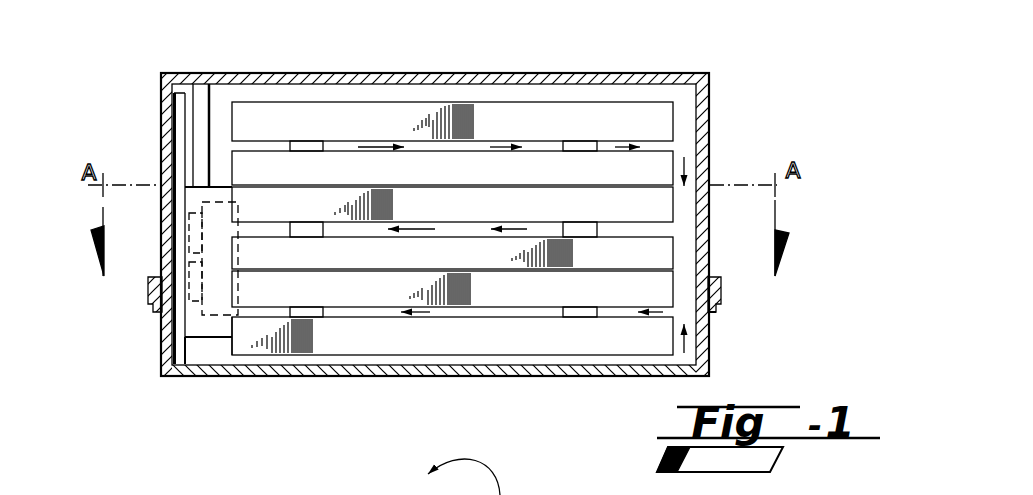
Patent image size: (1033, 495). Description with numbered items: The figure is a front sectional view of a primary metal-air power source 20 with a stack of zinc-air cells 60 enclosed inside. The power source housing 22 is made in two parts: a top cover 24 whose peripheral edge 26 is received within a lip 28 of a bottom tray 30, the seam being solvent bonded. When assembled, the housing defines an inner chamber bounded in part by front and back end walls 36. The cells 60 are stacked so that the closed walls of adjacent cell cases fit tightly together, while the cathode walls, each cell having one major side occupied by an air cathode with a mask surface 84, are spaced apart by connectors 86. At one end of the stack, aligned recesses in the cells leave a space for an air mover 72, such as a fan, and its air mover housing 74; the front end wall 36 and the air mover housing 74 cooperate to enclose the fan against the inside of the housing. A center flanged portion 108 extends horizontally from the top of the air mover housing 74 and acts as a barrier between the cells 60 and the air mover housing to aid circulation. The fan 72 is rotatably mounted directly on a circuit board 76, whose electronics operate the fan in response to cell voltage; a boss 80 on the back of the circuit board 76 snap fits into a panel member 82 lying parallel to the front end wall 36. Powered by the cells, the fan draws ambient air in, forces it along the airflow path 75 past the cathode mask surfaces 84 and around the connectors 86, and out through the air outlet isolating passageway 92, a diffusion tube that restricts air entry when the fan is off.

The primary metal-air power source 20 is at (680, 46).
The power source housing 22 is at (138, 164).
The top cover 24 is at (714, 115).
The peripheral edge 26 is at (712, 316).
The lip 28 is at (722, 281).
The bottom tray 30 is at (722, 354).
The front and back end walls 36 is at (167, 219).
The zinc-air cells 60 is at (528, 123).
The air mover 72 is at (213, 314).
The air mover housing 74 is at (197, 300).
The airflow path 75 is at (629, 147).
The circuit board 76 is at (192, 328).
The boss 80 is at (176, 259).
The panel member 82 is at (158, 133).
The cathode mask surface 84 is at (342, 140).
The connectors 86 is at (307, 140).
The air outlet isolating passageway 92 is at (210, 97).
The center flanged portion 108 is at (220, 186).